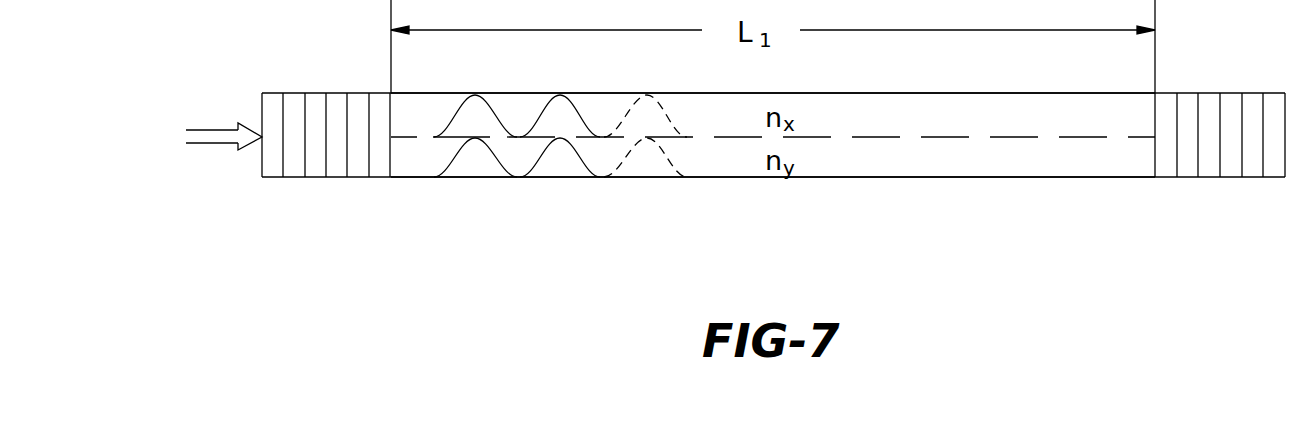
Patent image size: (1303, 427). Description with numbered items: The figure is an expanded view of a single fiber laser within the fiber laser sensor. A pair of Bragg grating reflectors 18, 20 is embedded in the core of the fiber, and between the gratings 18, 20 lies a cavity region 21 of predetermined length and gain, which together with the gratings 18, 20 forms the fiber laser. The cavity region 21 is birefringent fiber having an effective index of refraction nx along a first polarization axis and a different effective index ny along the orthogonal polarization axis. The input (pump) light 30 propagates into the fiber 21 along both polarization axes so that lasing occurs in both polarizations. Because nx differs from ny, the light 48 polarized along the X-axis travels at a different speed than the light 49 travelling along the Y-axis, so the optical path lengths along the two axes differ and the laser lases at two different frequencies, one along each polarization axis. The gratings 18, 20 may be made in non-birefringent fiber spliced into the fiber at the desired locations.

The Bragg grating reflector 18 is at (390, 93).
The Bragg grating reflector 20 is at (1285, 93).
The cavity region 21 is at (1155, 187).
The input (pump) light 30 is at (210, 136).
The light polarized along the X-axis 48 is at (545, 106).
The light travelling along the Y-axis 49 is at (542, 153).